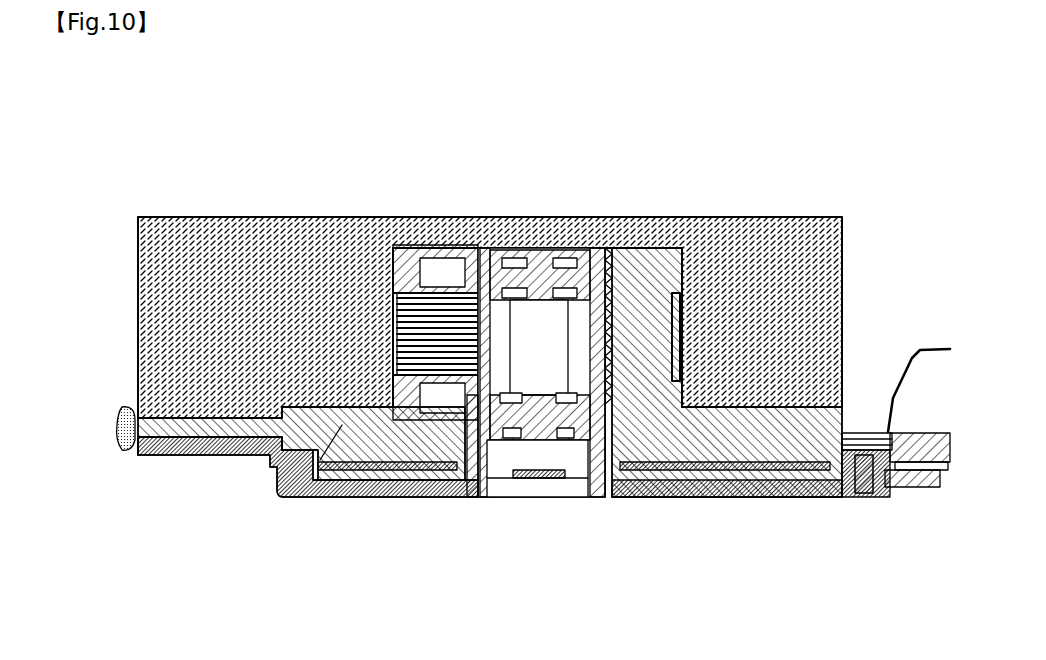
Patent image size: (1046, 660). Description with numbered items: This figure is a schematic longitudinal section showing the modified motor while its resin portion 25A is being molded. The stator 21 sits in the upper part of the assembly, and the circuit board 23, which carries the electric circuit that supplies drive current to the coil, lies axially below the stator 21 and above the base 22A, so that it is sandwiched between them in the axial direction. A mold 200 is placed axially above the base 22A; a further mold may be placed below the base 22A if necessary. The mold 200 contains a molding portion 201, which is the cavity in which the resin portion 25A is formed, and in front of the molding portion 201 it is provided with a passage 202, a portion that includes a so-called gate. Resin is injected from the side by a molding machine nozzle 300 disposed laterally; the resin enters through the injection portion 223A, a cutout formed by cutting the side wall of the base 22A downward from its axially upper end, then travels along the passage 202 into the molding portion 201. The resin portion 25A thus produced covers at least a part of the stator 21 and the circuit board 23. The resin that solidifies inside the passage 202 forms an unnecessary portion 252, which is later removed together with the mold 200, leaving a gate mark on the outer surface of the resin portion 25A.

The stator 21 is at (390, 300).
The mold 200 is at (528, 232).
The molding portion 201 is at (690, 407).
The molding machine nozzle 300 is at (125, 450).
The passage 202 is at (183, 440).
The injection portion 223A is at (145, 455).
The unnecessary portion 252 is at (223, 445).
The resin portion 25A is at (302, 498).
The circuit board 23 is at (397, 475).
The base 22A is at (660, 488).